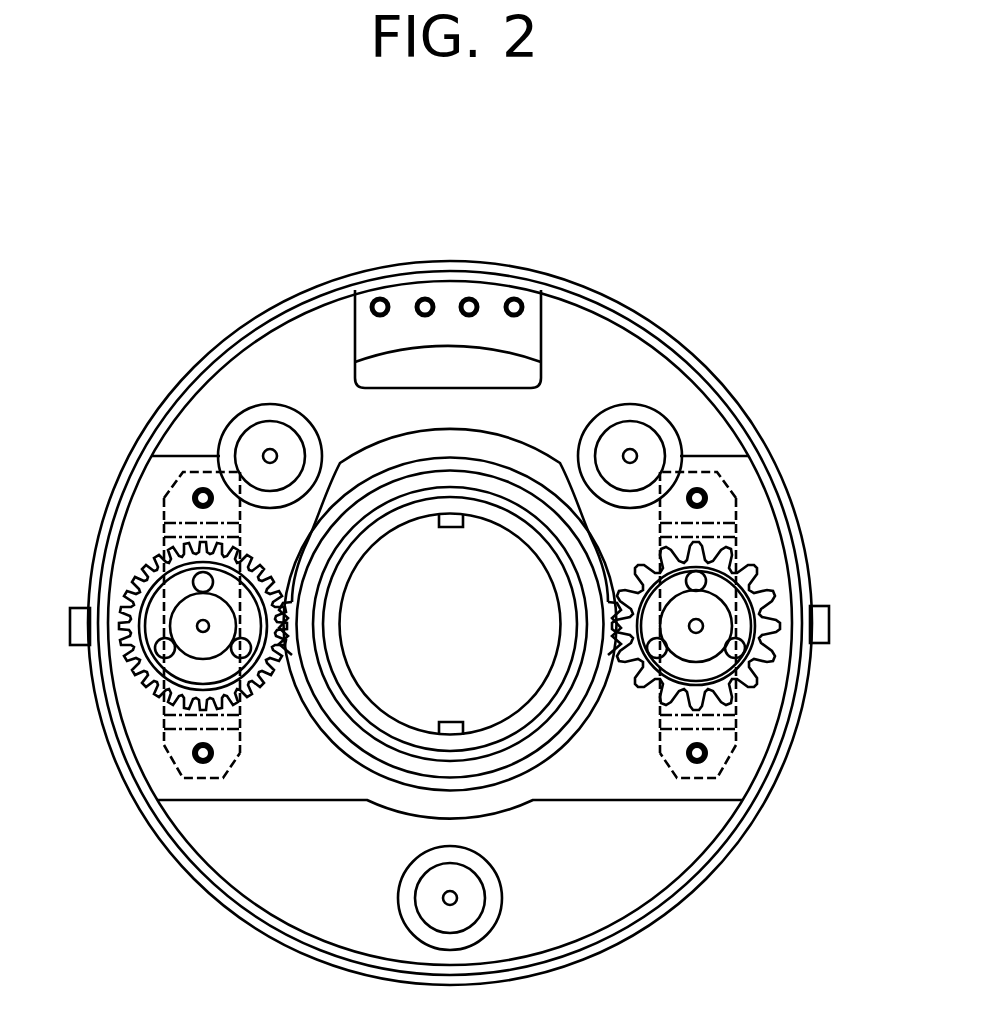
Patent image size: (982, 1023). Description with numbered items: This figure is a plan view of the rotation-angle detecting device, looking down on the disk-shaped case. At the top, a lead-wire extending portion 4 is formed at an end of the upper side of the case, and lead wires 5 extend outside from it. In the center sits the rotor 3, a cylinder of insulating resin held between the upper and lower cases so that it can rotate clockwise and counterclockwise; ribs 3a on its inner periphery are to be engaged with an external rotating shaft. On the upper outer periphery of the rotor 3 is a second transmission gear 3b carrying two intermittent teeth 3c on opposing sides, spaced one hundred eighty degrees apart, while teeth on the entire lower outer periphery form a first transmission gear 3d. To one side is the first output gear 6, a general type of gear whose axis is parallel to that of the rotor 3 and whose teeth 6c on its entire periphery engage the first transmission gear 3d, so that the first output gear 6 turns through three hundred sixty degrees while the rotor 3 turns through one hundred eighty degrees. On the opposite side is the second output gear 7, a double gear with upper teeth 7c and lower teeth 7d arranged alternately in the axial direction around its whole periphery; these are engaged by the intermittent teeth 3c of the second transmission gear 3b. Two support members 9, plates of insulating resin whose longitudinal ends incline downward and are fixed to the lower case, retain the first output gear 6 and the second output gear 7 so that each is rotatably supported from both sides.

The rotor 3 is at (498, 762).
The ribs 3a is at (450, 528).
The second transmission gear 3b is at (577, 698).
The intermittent teeth 3c is at (287, 640).
The first transmission gear 3d is at (553, 757).
The lead-wire extending portion 4 is at (530, 340).
The lead wires 5 is at (512, 305).
The first output gear 6 is at (138, 567).
The teeth 6c is at (140, 676).
The second output gear 7 is at (760, 572).
The upper teeth 7c is at (776, 650).
The lower teeth 7d is at (752, 675).
The support members 9 is at (158, 755).